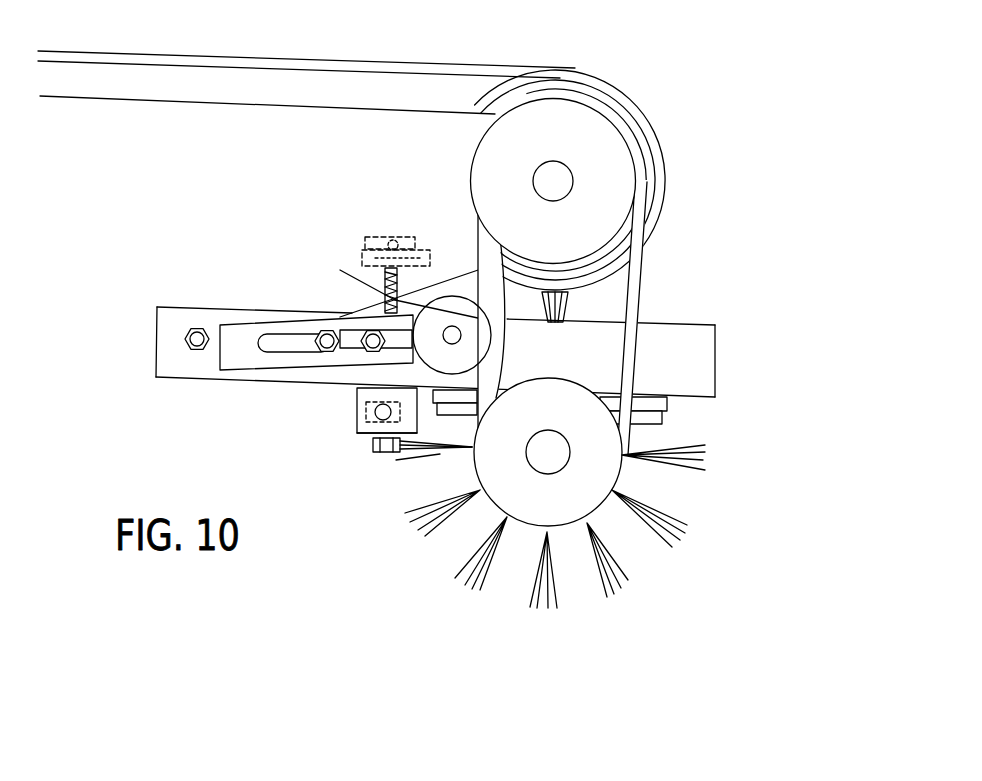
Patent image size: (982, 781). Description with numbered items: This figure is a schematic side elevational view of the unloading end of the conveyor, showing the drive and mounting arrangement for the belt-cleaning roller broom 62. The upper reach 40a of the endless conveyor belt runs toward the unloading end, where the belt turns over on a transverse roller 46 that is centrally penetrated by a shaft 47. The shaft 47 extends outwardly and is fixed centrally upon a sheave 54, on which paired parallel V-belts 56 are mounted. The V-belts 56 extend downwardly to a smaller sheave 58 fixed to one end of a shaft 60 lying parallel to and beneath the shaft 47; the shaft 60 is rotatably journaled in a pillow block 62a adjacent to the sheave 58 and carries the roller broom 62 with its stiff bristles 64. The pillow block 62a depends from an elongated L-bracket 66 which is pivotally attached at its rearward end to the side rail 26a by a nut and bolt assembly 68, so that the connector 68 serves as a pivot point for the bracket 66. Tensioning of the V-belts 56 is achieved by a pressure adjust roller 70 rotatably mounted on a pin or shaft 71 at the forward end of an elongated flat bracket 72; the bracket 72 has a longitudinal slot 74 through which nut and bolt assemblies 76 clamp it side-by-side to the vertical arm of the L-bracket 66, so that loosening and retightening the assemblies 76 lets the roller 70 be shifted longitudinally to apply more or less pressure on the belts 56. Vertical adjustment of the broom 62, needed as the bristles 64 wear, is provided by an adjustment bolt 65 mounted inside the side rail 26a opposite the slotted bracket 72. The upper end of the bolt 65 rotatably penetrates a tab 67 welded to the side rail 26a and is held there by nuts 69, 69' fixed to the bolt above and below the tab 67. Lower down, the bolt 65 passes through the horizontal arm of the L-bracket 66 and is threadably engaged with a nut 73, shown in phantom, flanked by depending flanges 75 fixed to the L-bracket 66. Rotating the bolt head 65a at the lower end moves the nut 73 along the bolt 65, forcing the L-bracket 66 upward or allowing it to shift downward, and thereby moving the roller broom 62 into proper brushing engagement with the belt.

The upper reach 40a is at (284, 58).
The roller 46 is at (527, 92).
The sheave 54 is at (573, 130).
The shaft 47 is at (556, 185).
The V-belts 56 is at (618, 294).
The L-bracket 66 is at (700, 355).
The nut and bolt assembly 68 is at (197, 330).
The flat bracket 72 is at (238, 358).
The longitudinal slot 74 is at (277, 345).
The nut and bolt assemblies 76 is at (320, 336).
The adjustment bolt 65 is at (450, 335).
The pin or shaft 71 is at (385, 293).
The tab 67 is at (372, 243).
The nut 69 is at (389, 198).
The nut 69' is at (355, 240).
The depending flanges 75 is at (370, 392).
The nut 73 is at (365, 435).
The bolt head 65a is at (375, 447).
The pressure adjust roller 70 is at (437, 455).
The shaft 60 is at (552, 452).
The sheave 58 is at (597, 487).
The roller broom 62 is at (694, 517).
The pillow block 62a is at (650, 419).
The bristles 64 is at (697, 456).
The side rail 26a is at (170, 170).